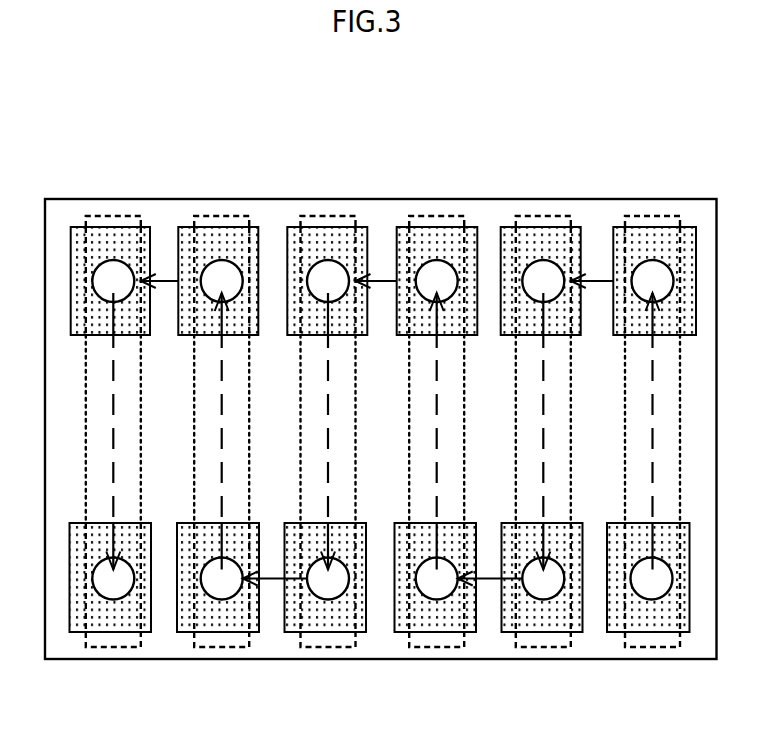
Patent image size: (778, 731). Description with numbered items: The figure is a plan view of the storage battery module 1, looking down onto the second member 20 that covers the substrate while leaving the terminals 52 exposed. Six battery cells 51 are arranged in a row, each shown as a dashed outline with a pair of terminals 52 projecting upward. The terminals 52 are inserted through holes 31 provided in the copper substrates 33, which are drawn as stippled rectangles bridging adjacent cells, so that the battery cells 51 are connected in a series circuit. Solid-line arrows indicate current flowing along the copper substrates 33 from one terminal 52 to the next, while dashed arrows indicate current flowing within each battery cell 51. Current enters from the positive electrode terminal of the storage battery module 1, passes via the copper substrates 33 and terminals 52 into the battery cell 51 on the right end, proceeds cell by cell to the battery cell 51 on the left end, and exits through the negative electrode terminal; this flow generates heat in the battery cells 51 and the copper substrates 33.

The storage battery module 1 is at (113, 173).
The second member 20 is at (600, 215).
The hole 31 is at (450, 260).
The copper substrate 33 is at (663, 240).
The battery cell 51 is at (527, 217).
The terminal 52 is at (436, 271).